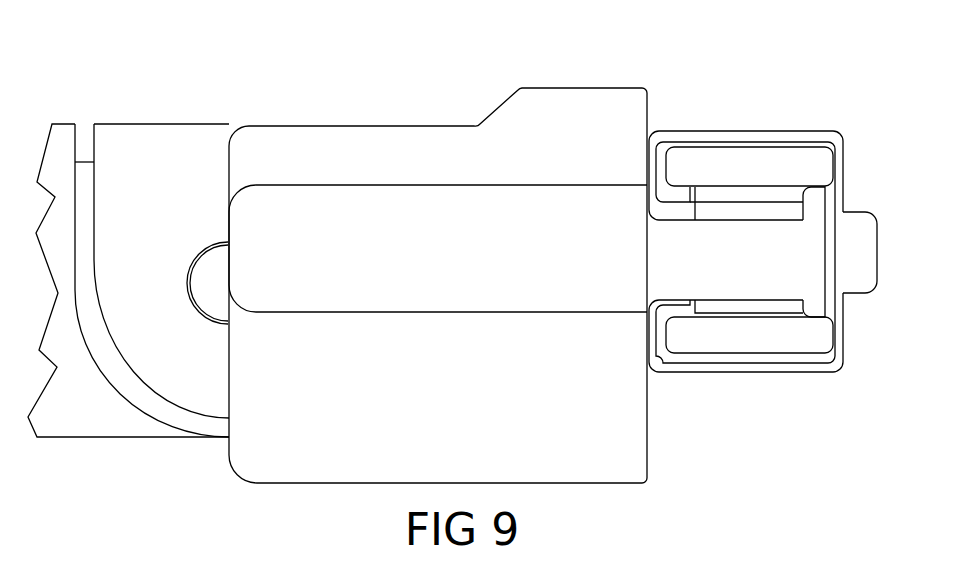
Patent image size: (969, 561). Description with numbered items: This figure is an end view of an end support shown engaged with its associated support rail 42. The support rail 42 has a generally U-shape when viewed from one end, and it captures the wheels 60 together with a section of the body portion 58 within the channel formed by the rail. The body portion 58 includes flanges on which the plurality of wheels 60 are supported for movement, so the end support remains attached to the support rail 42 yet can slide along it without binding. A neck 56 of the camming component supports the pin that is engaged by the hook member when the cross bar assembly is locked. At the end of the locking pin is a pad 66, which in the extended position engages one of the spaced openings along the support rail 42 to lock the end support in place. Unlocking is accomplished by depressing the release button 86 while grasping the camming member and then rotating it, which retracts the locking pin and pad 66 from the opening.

The support rail 42 is at (787, 128).
The neck 56 is at (177, 145).
The body portion 58 is at (636, 452).
The wheels 60 is at (752, 162).
The pad 66 is at (862, 226).
The release button 86 is at (208, 262).